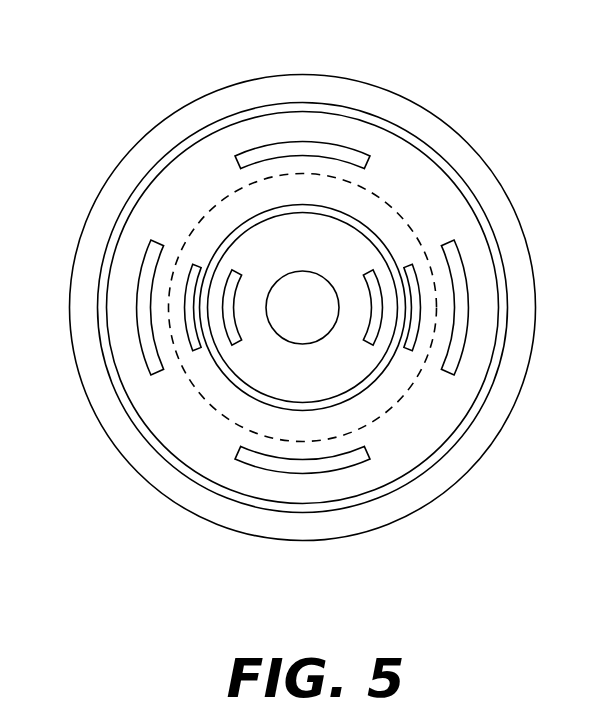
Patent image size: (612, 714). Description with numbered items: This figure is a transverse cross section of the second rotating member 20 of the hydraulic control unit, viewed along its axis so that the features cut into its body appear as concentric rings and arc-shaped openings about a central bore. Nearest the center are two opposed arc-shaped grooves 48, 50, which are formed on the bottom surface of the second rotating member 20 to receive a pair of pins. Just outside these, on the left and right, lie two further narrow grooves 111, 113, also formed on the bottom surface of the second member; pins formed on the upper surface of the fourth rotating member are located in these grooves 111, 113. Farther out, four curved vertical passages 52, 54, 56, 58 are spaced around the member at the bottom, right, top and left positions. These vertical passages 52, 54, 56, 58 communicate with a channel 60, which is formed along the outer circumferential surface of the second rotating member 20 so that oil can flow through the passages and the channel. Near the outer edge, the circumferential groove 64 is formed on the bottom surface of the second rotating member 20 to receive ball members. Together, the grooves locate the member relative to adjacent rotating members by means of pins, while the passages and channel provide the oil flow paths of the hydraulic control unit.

The second rotating member 20 is at (123, 116).
The groove 48 is at (235, 276).
The groove 50 is at (371, 276).
The vertical passage 52 is at (300, 462).
The vertical passage 54 is at (462, 312).
The vertical passage 56 is at (302, 147).
The vertical passage 58 is at (144, 311).
The channel 60 is at (220, 453).
The circumferential groove 64 is at (442, 452).
The groove 111 is at (197, 346).
The groove 113 is at (409, 343).